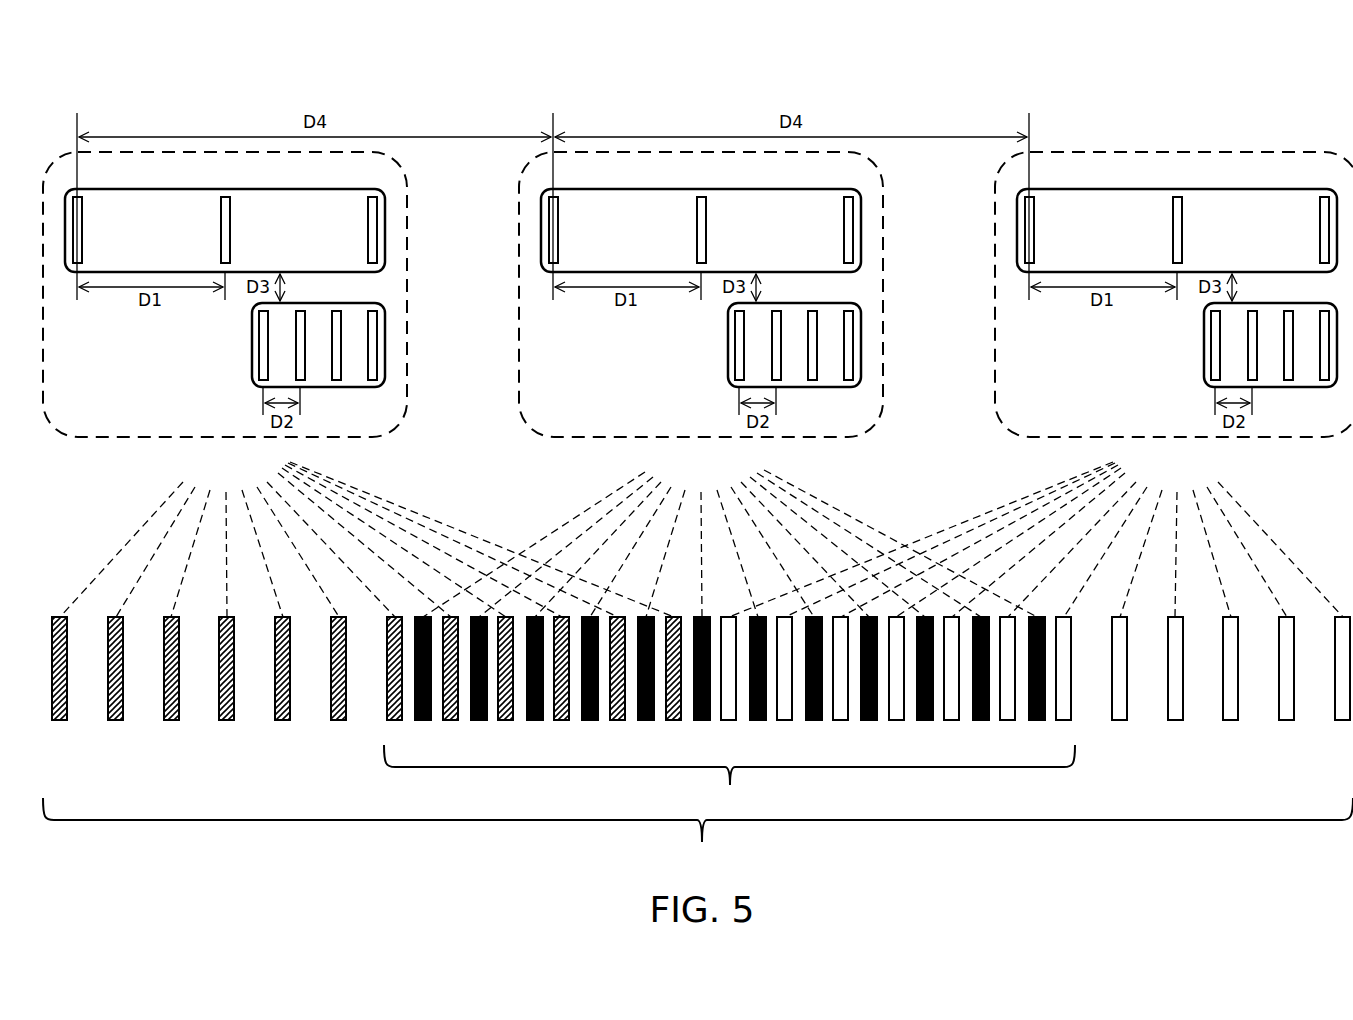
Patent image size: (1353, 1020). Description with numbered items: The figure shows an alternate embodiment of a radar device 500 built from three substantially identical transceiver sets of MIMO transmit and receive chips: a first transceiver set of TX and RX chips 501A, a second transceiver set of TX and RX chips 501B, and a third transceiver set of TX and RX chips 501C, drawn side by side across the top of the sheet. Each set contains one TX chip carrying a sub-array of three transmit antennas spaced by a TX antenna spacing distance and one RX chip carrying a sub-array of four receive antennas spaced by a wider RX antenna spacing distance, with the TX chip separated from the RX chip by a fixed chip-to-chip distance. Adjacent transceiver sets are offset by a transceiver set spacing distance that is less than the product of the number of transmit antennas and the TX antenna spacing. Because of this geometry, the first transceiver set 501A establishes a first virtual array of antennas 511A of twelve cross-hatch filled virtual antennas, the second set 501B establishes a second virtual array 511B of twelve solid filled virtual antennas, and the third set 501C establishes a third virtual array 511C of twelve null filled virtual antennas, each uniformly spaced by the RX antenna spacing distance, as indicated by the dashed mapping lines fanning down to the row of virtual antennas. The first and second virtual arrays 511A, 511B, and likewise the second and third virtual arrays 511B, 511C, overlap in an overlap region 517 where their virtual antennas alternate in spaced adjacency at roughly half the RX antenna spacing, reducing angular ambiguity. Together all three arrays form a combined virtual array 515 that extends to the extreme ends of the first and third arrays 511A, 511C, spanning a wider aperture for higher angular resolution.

The radar device 500 is at (1000, 60).
The first transceiver set of TX and RX chips 501A is at (400, 178).
The second transceiver set of TX and RX chips 501B is at (876, 178).
The third transceiver set of TX and RX chips 501C is at (995, 311).
The first virtual array of antennas 511A is at (354, 478).
The second virtual array of antennas 511B is at (572, 505).
The third virtual array of antennas 511C is at (990, 500).
The combined virtual array 515 is at (729, 836).
The overlap region 517 is at (693, 778).